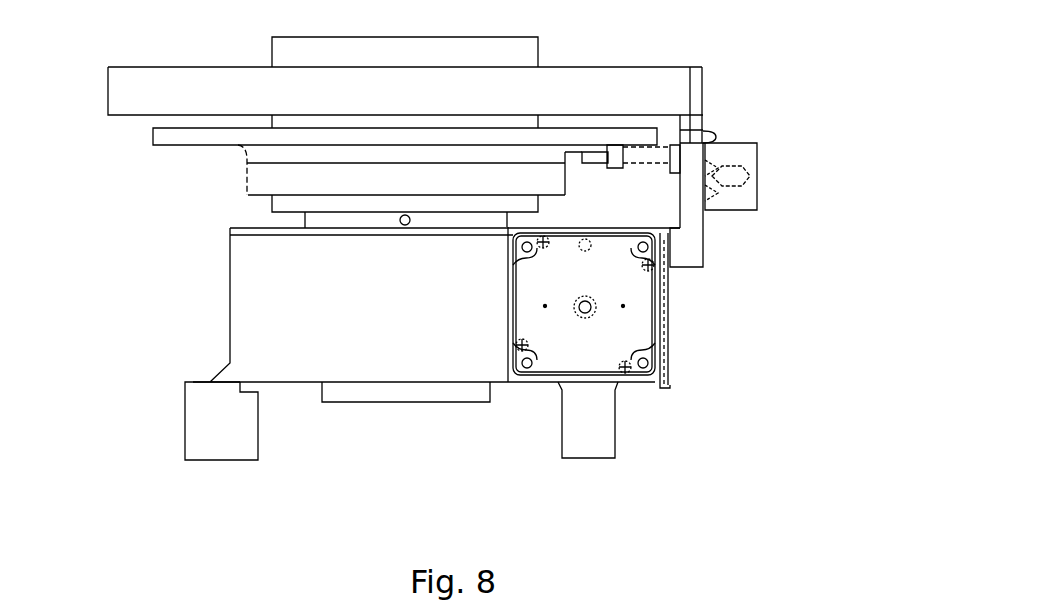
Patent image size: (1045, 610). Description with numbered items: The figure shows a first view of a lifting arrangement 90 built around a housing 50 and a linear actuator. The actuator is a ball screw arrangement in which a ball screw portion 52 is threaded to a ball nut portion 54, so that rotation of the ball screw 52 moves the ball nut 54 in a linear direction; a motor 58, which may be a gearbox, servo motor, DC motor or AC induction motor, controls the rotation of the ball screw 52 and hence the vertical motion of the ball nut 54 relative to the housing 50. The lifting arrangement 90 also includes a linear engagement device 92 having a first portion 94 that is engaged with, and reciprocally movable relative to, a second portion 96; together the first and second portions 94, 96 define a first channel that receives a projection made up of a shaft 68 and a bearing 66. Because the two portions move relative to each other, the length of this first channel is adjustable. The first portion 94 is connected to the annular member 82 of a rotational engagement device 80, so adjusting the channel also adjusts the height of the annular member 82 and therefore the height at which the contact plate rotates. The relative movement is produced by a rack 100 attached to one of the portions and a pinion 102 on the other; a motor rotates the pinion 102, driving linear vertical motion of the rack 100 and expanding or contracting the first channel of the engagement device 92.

The housing 50 is at (250, 267).
The ball screw portion 52 is at (537, 52).
The ball nut portion 54 is at (158, 137).
The motor 58 is at (648, 328).
The bearing 66 is at (677, 145).
The shaft 68 is at (642, 158).
The rotational engagement device 80 is at (120, 190).
The annular member 82 is at (132, 95).
The lifting arrangement 90 is at (843, 53).
The linear engagement device 92 is at (768, 120).
The first portion 94 is at (690, 133).
The second portion 96 is at (693, 258).
The rack 100 is at (708, 138).
The pinion 102 is at (737, 182).